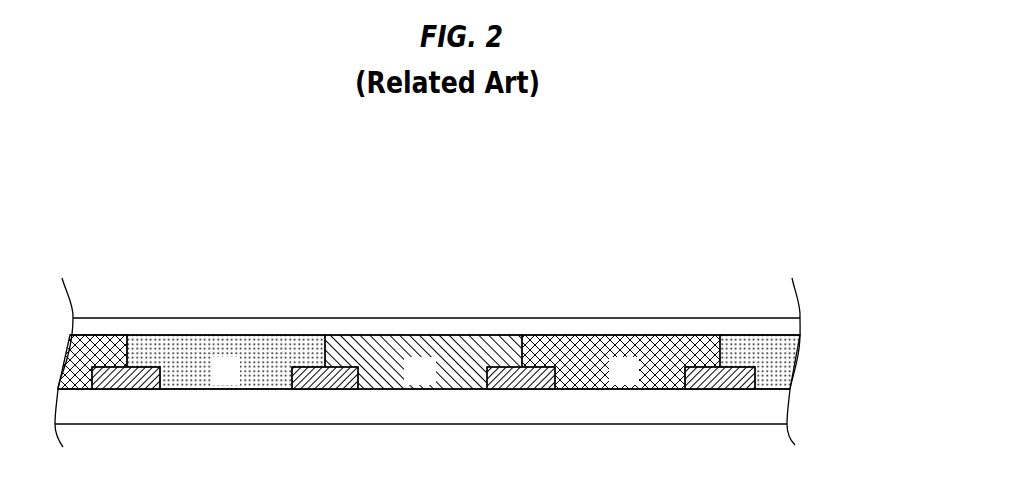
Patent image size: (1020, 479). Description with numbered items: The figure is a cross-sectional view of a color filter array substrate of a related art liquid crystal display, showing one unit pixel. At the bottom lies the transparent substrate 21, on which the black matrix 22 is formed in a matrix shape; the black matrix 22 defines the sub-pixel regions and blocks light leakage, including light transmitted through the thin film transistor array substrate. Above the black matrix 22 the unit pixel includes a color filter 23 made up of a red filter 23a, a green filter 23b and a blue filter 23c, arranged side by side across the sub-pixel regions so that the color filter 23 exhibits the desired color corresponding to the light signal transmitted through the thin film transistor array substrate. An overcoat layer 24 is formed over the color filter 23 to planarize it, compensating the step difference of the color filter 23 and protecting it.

The transparent substrate 21 is at (777, 413).
The black matrix 22 is at (463, 268).
The color filter 23 is at (423, 268).
The red filter 23a is at (227, 347).
The green filter 23b is at (422, 345).
The blue filter 23c is at (621, 302).
The overcoat layer 24 is at (788, 328).